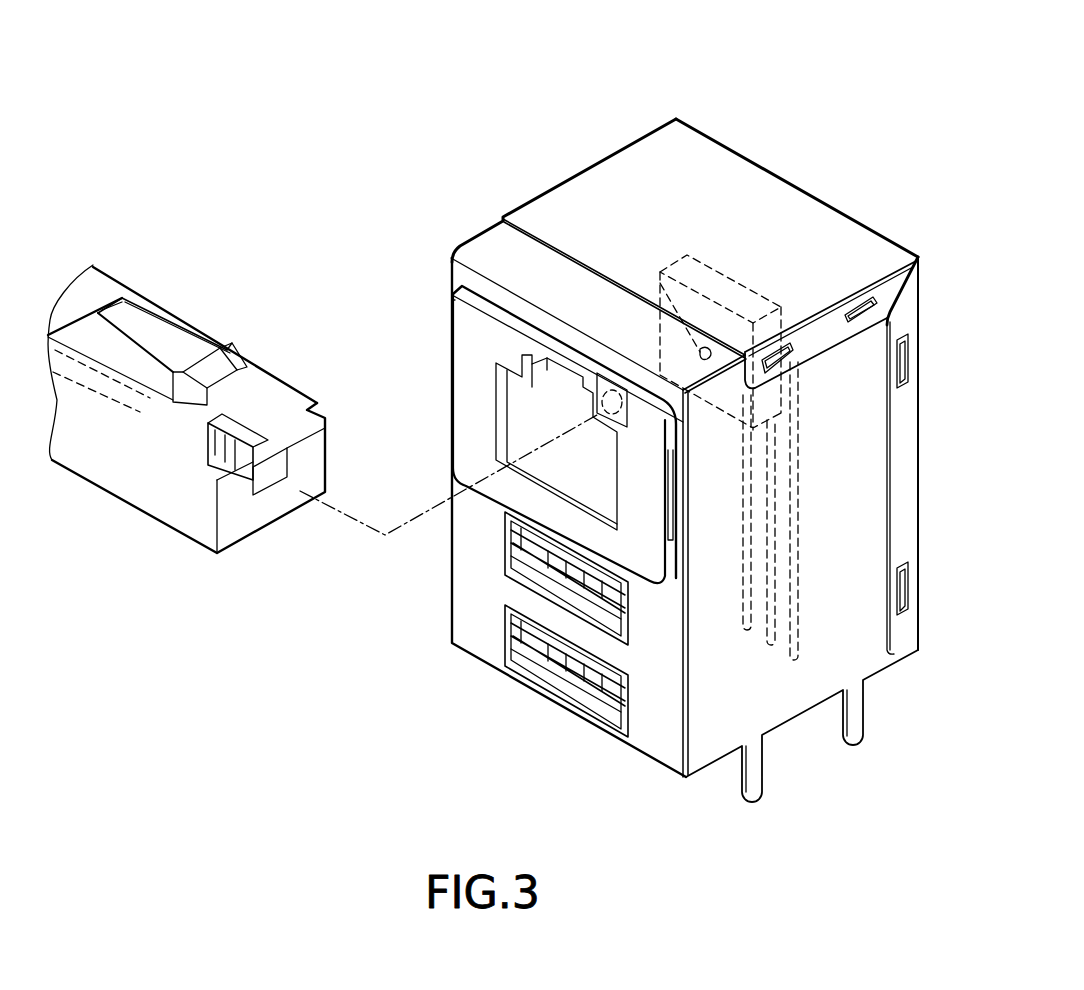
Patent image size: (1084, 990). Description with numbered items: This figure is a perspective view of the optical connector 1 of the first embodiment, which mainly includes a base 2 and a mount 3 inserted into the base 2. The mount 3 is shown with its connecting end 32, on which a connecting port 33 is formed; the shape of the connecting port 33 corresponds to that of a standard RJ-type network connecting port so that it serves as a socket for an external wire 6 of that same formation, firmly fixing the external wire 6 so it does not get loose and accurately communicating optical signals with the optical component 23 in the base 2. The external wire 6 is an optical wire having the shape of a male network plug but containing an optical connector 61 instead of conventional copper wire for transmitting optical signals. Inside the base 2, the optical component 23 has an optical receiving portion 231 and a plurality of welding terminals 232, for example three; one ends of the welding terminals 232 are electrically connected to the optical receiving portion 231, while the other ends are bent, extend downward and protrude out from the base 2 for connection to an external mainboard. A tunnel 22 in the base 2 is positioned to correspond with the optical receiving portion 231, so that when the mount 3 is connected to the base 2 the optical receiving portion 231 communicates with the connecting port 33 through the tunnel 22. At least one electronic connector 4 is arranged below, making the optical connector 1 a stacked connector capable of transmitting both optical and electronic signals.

The optical connector 1 is at (690, 82).
The base 2 is at (573, 165).
The mount 3 is at (448, 355).
The electronic connector 4 is at (575, 684).
The external wire 6 is at (189, 328).
The optical connector 61 is at (200, 417).
The tunnel 22 is at (632, 398).
The optical component 23 is at (723, 287).
The optical receiving portion 231 is at (660, 272).
The welding terminals 232 is at (797, 625).
The connecting end 32 is at (465, 392).
The connecting port 33 is at (508, 434).